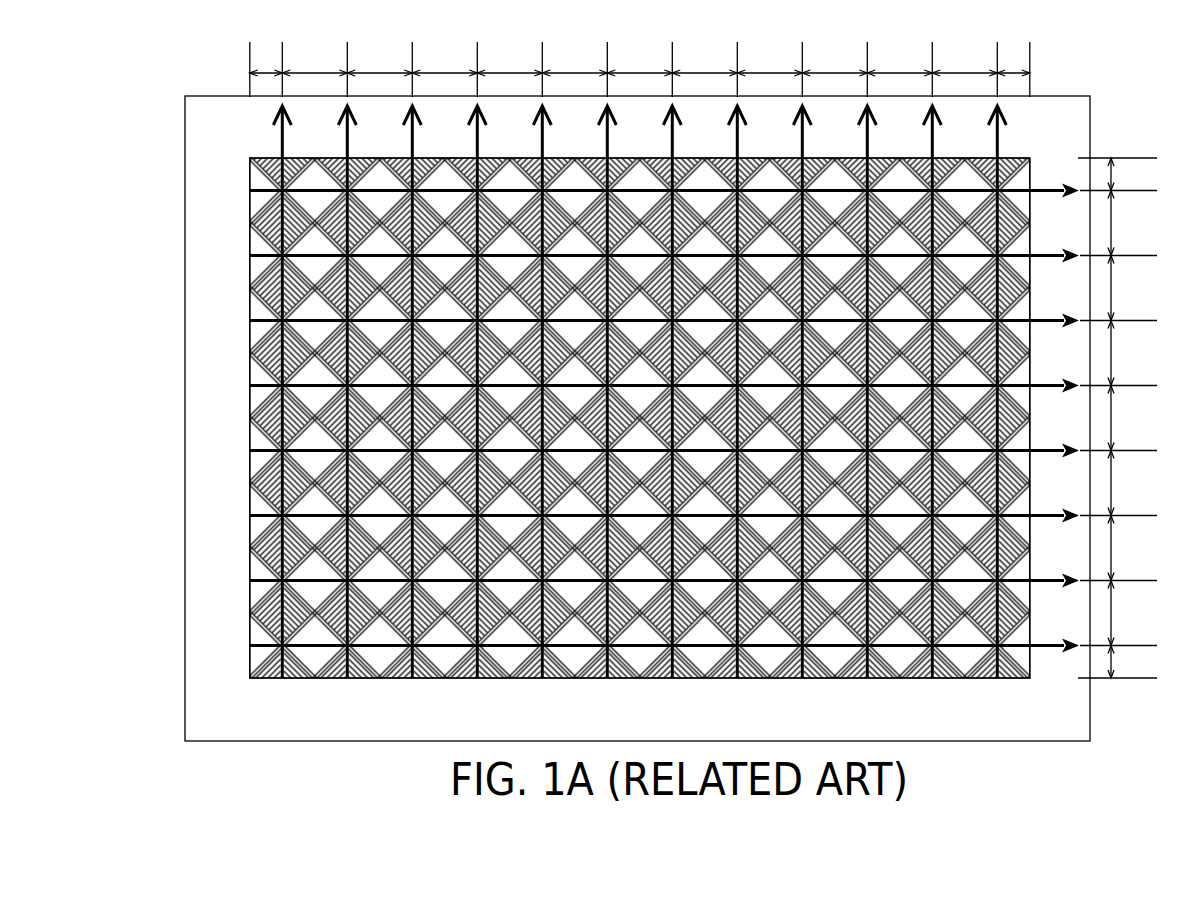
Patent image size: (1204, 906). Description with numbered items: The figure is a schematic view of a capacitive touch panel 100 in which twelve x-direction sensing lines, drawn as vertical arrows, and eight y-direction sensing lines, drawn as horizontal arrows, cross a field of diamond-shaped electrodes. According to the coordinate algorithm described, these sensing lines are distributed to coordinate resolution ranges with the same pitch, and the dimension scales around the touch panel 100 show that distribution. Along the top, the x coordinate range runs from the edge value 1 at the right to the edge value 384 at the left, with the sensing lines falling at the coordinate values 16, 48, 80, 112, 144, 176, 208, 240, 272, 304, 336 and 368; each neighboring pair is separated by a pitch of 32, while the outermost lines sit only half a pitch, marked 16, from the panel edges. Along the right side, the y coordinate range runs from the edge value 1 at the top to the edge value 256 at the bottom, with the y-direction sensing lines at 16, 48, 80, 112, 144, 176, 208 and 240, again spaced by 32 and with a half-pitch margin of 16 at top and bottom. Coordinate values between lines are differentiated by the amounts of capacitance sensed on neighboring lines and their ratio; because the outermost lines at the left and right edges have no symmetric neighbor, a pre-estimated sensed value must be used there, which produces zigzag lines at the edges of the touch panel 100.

The touch panel 100 is at (1182, 776).
The first sensing coordinate 1 is at (1099, 92).
The sensing coordinate 16 / half pitch 16 is at (720, 343).
The electrode pitch 32 is at (695, 363).
The sensing coordinate 48 is at (1052, 140).
The sensing coordinate 80 is at (1020, 173).
The sensing coordinate 112 is at (989, 205).
The sensing coordinate 144 is at (956, 238).
The sensing coordinate 176 is at (924, 270).
The sensing coordinate 208 is at (891, 303).
The sensing coordinate 240 is at (859, 335).
The last Y sensing coordinate 256 is at (1132, 677).
The sensing coordinate 272 is at (477, 56).
The sensing coordinate 304 is at (412, 56).
The sensing coordinate 336 is at (347, 56).
The sensing coordinate 368 is at (282, 56).
The last X sensing coordinate 384 is at (250, 56).